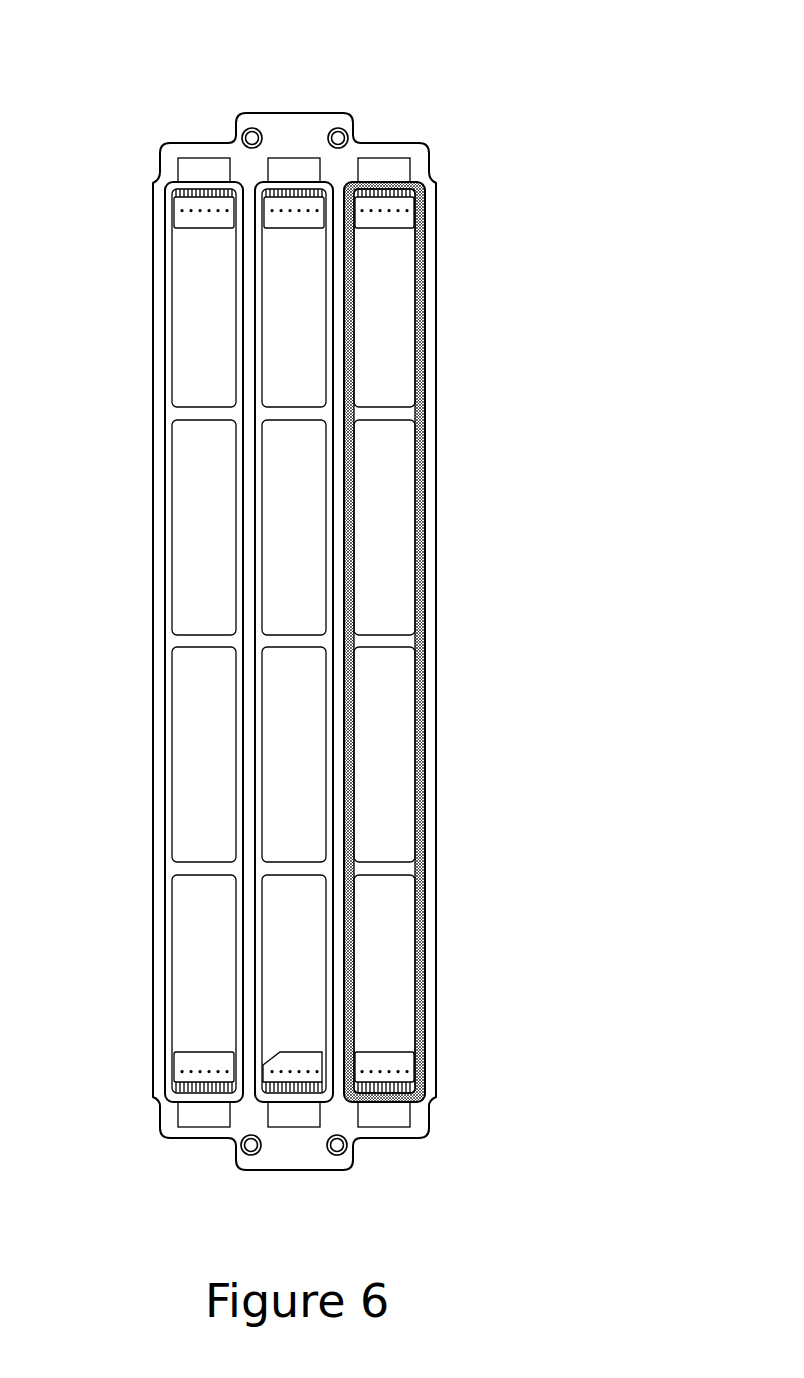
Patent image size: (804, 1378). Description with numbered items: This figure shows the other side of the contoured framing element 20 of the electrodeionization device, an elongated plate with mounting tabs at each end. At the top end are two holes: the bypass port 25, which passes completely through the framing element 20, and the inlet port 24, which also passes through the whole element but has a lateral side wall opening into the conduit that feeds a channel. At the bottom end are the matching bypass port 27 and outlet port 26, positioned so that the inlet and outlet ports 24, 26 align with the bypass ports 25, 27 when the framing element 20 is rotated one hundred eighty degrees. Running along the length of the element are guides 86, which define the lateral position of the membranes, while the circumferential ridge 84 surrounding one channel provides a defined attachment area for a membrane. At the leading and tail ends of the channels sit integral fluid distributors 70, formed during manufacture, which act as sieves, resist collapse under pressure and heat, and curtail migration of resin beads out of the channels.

The contoured framing element 20 is at (468, 137).
The inlet port 24 is at (339, 128).
The bypass port 25 is at (252, 128).
The outlet port 26 is at (341, 1156).
The bypass port 27 is at (245, 1157).
The integral fluid distributor 70 is at (193, 223).
The circumferential ridge 84 is at (423, 767).
The guides 86 is at (249, 457).